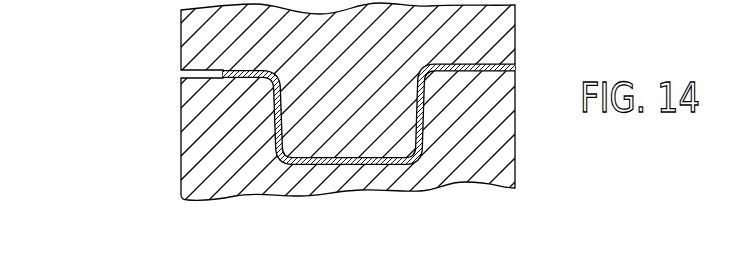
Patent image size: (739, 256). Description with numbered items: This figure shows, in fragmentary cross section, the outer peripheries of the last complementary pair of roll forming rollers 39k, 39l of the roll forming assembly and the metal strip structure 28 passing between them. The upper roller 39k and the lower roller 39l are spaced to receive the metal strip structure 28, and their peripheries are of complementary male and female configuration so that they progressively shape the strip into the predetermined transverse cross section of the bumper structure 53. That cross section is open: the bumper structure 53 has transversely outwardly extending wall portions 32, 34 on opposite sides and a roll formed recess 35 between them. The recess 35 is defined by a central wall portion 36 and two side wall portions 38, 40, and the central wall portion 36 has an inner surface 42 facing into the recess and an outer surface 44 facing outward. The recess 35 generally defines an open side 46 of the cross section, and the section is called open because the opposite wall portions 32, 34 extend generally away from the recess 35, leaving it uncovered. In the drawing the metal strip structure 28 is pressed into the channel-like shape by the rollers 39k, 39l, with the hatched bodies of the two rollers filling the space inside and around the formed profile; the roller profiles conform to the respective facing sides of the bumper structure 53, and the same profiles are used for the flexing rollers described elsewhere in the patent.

The roll forming roller 39k is at (207, 43).
The roll forming roller 39l is at (201, 161).
The metal strip structure 28 is at (264, 190).
The transversely outwardly extending wall portion 32 is at (234, 78).
The transversely outwardly extending wall portion 34 is at (505, 70).
The central wall portion 36 is at (373, 163).
The side wall portion 38 is at (286, 152).
The side wall portion 40 is at (433, 118).
The inner surface 42 is at (361, 119).
The outer surface 44 is at (309, 192).
The open side 46 is at (341, 71).
The roll formed recess 35 is at (376, 87).
The bumper structure 53 is at (304, 112).